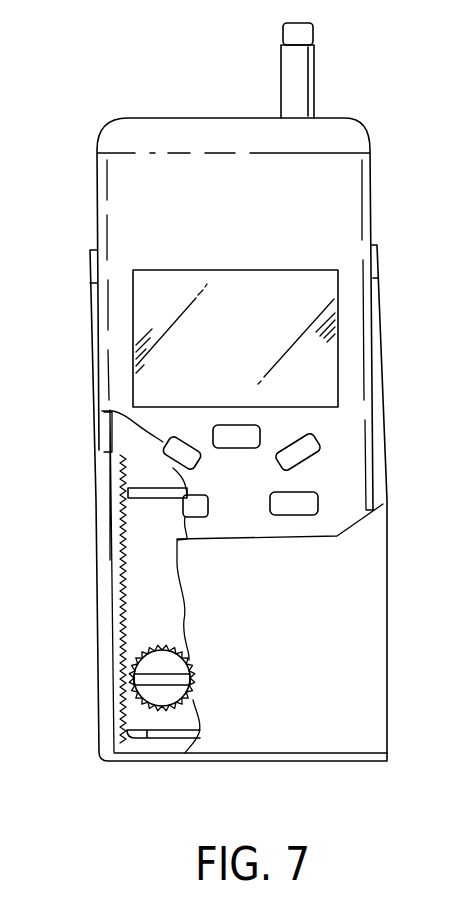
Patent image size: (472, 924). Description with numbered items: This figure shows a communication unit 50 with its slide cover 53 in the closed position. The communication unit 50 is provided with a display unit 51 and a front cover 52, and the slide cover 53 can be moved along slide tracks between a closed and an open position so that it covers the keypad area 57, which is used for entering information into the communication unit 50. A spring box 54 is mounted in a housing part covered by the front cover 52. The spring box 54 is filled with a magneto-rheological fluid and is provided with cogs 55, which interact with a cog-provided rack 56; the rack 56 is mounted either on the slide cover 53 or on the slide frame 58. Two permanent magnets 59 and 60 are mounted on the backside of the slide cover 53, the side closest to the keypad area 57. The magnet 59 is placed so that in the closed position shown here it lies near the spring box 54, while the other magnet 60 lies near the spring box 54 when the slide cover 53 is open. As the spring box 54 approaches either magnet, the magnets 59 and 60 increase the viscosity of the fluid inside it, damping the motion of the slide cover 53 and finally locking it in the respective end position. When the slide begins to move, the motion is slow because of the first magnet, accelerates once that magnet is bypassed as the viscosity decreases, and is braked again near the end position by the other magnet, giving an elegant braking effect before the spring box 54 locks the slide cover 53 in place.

The communication unit 50 is at (88, 211).
The display unit 51 is at (153, 312).
The front cover 52 is at (323, 167).
The slide cover 53 is at (347, 738).
The spring box 54 is at (165, 698).
The cogs 55 is at (142, 710).
The rack 56 is at (118, 618).
The keypad area 57 is at (310, 500).
The slide frame 58 is at (100, 537).
The permanent magnet 59 is at (150, 677).
The permanent magnet 60 is at (142, 492).